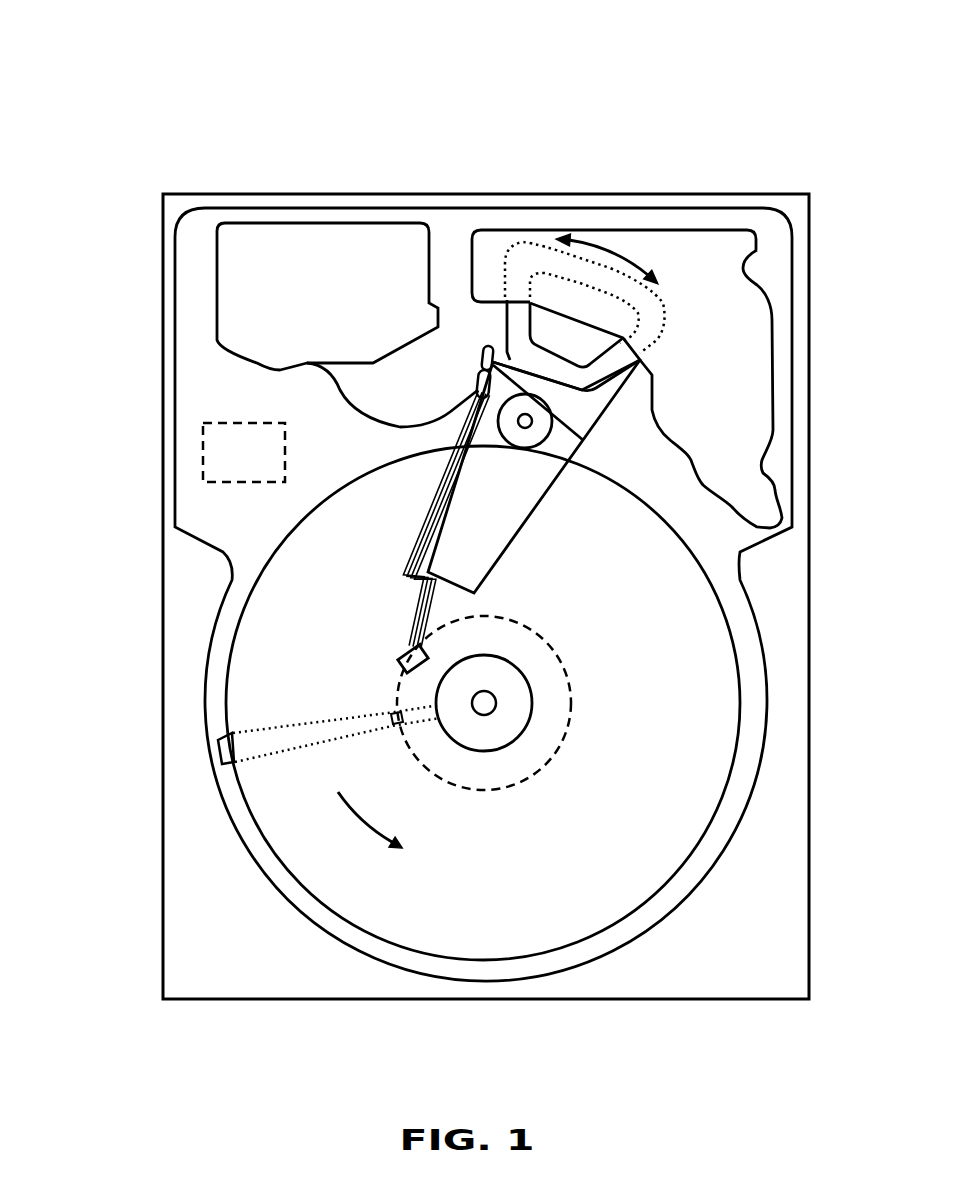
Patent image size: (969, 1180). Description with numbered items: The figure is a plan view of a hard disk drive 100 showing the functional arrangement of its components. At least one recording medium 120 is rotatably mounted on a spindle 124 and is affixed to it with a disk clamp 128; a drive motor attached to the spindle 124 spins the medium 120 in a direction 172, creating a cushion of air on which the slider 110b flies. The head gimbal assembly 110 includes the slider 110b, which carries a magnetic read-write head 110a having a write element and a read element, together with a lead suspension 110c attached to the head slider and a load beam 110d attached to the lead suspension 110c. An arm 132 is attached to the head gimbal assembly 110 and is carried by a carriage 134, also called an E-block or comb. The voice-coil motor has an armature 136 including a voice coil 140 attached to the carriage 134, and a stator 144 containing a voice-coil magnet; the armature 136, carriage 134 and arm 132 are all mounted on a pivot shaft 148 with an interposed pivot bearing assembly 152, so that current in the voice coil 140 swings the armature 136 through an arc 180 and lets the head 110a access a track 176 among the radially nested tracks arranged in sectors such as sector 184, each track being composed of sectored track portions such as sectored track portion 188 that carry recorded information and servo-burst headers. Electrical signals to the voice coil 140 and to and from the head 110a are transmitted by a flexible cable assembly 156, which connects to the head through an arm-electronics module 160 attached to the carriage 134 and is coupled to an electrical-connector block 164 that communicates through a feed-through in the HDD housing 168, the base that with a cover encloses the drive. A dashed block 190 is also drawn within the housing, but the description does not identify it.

The hard disk drive 100 is at (86, 68).
The head gimbal assembly 110 is at (258, 520).
The magnetic read-write head 110a is at (408, 650).
The slider 110b is at (412, 630).
The lead suspension 110c is at (408, 603).
The load beam 110d is at (405, 567).
The recording medium 120 is at (670, 653).
The spindle 124 is at (484, 703).
The disk clamp 128 is at (510, 718).
The arm 132 is at (477, 537).
The carriage 134 is at (543, 453).
The armature 136 is at (498, 330).
The voice coil 140 is at (520, 313).
The stator 144 is at (737, 323).
The pivot shaft 148 is at (525, 421).
The pivot bearing assembly 152 is at (537, 433).
The flexible cable assembly 156 is at (345, 395).
The arm-electronics module 160 is at (478, 387).
The electrical-connector block 164 is at (242, 295).
The HDD housing 168 is at (790, 208).
The direction 172 is at (372, 826).
The track 176 is at (562, 663).
The arc 180 is at (612, 243).
The sector 184 is at (220, 742).
The sectored track portion 188 is at (388, 715).
The controller 190 is at (210, 447).